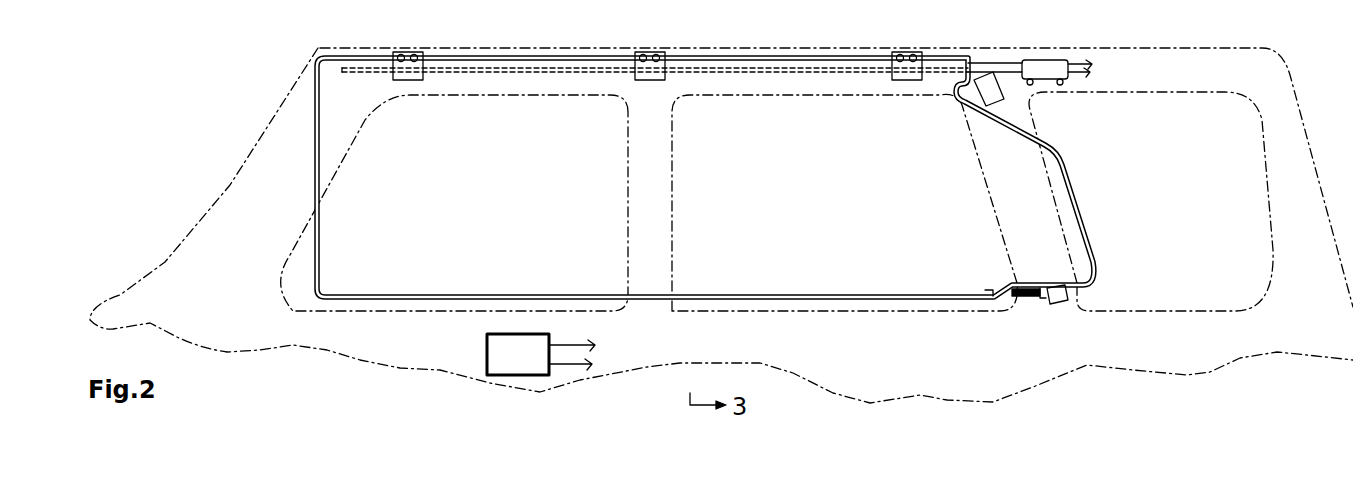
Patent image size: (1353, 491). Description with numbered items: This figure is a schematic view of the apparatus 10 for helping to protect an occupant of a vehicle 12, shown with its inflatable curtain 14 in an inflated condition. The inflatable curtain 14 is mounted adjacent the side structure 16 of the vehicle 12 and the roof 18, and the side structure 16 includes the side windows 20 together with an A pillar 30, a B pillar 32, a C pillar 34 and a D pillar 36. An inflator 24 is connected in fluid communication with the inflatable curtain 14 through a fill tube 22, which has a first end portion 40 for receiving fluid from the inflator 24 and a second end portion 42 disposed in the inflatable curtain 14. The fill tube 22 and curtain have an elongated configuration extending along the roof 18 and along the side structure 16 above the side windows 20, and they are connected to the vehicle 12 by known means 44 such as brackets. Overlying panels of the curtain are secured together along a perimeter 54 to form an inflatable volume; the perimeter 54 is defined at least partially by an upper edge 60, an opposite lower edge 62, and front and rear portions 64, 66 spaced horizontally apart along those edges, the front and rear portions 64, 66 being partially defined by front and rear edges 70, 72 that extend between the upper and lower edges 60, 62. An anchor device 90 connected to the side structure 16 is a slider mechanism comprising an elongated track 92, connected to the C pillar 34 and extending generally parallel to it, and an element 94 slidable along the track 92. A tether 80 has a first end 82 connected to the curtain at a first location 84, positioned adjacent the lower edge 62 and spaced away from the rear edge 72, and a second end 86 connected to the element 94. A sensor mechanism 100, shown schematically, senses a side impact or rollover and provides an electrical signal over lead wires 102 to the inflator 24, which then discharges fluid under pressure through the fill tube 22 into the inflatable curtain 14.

The apparatus 10 is at (300, 40).
The vehicle 12 is at (255, 76).
The inflatable curtain 14 is at (550, 128).
The side structure 16 is at (375, 340).
The roof 18 is at (1150, 48).
The side windows 20 is at (285, 262).
The fill tube 22 is at (985, 68).
The inflator 24 is at (1050, 60).
The A pillar 30 is at (225, 197).
The B pillar 32 is at (645, 203).
The C pillar 34 is at (1048, 158).
The D pillar 36 is at (1273, 185).
The first end portion 40 is at (1008, 65).
The second end portion 42 is at (497, 62).
The known means 44 is at (407, 52).
The perimeter 54 is at (482, 300).
The upper edge 60 is at (838, 20).
The lower edge 62 is at (632, 300).
The front portion 64 is at (335, 165).
The rear portion 66 is at (1040, 205).
The front edge 70 is at (316, 115).
The rear edge 72 is at (1075, 187).
The tether 80 is at (1012, 300).
The first end 82 is at (988, 290).
The first location 84 is at (988, 292).
The second end 86 is at (1036, 286).
The anchor device 90 is at (1088, 283).
The track 92 is at (1080, 297).
The element 94 is at (1066, 305).
The sensor mechanism 100 is at (512, 360).
The lead wires 102 is at (1085, 60).